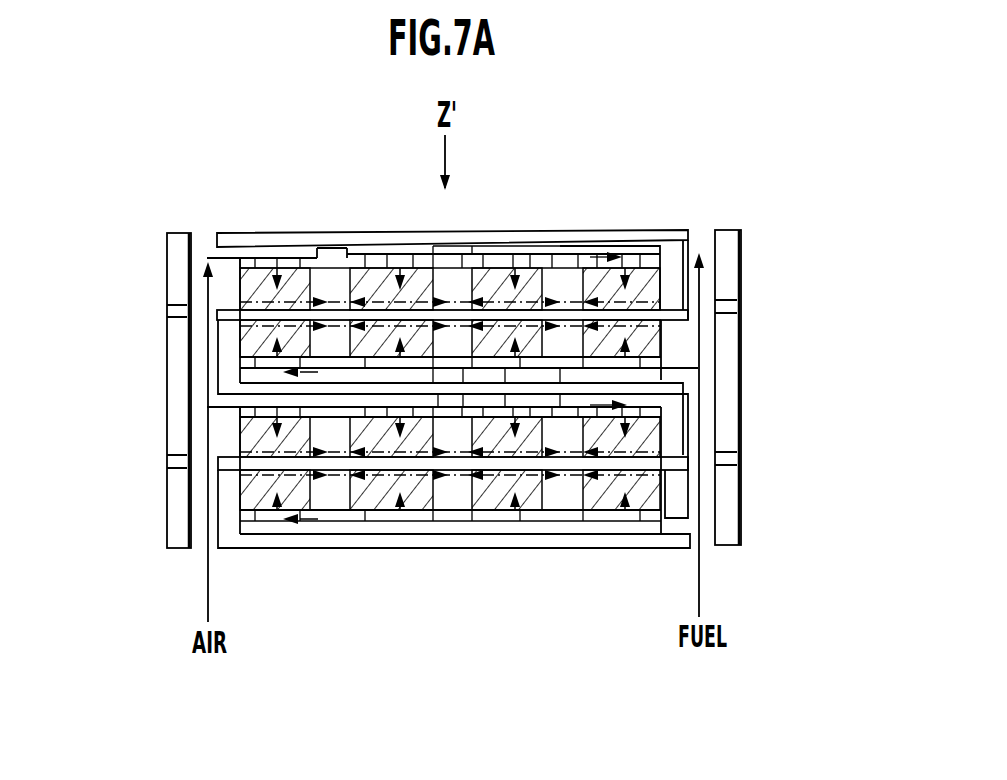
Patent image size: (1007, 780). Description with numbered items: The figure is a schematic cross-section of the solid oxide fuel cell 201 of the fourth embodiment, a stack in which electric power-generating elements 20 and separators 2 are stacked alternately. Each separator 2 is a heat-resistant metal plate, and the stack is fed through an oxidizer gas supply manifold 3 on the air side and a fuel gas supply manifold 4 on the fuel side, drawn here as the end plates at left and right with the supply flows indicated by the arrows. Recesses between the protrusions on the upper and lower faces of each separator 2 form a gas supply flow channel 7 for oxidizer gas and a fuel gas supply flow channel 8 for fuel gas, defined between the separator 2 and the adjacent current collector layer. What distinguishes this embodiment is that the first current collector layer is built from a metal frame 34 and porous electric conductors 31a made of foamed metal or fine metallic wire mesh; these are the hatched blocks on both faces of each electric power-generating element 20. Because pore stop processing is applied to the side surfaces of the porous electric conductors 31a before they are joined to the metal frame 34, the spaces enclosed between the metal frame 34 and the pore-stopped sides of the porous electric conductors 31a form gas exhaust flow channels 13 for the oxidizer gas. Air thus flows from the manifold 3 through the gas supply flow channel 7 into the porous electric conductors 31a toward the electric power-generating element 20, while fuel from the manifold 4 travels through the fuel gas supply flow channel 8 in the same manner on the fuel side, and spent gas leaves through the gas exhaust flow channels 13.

The separator 2 is at (577, 232).
The oxidizer gas supply manifold 3 is at (193, 560).
The fuel gas supply manifold 4 is at (722, 570).
The gas supply flow channel 7 is at (399, 258).
The fuel gas supply flow channel 8 is at (493, 368).
The gas exhaust flow channel 13 is at (455, 287).
The electric power-generating element 20 is at (222, 313).
The porous electric conductor 31a is at (256, 285).
The metal frame 34 is at (362, 262).
The solid oxide fuel cell 201 is at (130, 418).